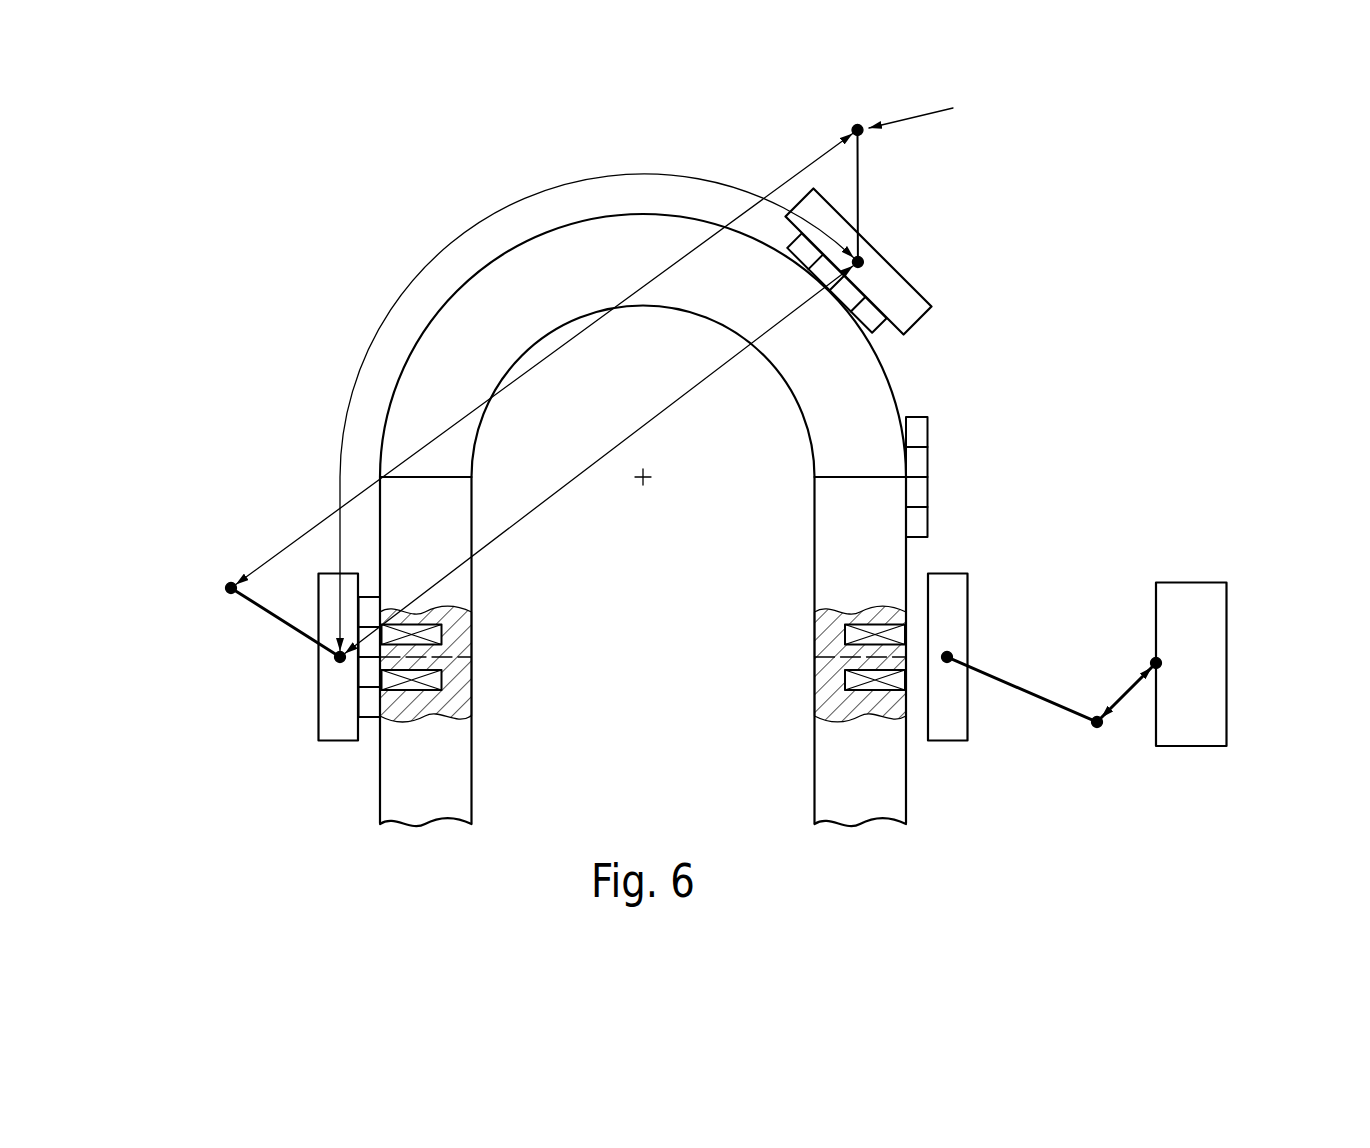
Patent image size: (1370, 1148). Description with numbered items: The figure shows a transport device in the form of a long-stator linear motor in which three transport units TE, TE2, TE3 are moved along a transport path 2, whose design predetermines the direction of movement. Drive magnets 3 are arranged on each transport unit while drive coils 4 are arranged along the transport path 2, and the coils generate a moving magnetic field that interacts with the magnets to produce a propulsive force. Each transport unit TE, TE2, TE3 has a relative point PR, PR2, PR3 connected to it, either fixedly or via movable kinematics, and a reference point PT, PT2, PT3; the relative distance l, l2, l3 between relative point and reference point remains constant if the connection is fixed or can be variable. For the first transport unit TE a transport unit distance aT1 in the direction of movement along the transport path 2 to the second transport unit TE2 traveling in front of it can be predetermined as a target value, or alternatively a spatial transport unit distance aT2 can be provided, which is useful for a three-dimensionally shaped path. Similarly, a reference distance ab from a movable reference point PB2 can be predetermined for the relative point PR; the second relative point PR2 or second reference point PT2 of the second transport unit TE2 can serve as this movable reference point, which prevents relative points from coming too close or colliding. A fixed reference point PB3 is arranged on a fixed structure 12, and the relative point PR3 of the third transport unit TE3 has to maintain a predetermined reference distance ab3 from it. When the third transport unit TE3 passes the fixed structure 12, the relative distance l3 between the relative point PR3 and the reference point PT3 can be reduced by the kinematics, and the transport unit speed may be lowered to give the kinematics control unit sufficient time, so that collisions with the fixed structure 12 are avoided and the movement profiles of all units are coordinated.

The transport path 2 is at (430, 763).
The drive magnets 3 is at (370, 610).
The drive coils 4 is at (428, 678).
The fixed structure 12 is at (1198, 631).
The transport unit TE is at (337, 720).
The second transport unit TE2 is at (914, 308).
The third transport unit TE3 is at (948, 720).
The relative point PR is at (226, 594).
The reference point PT is at (334, 661).
The second relative point PR2 is at (884, 153).
The second reference point PT2 is at (864, 261).
The movable reference point PB2 is at (937, 112).
The third reference point PT3 is at (950, 651).
The third relative point PR3 is at (1106, 745).
The fixed reference point PB3 is at (1152, 656).
The relative distance l is at (285, 618).
The second relative distance l2 is at (871, 196).
The third relative distance l3 is at (1022, 682).
The predetermined reference distance ab3 is at (1120, 684).
The transport unit distance aT1 is at (597, 412).
The spatial transport unit distance aT2 is at (599, 460).
The reference distance ab is at (544, 359).